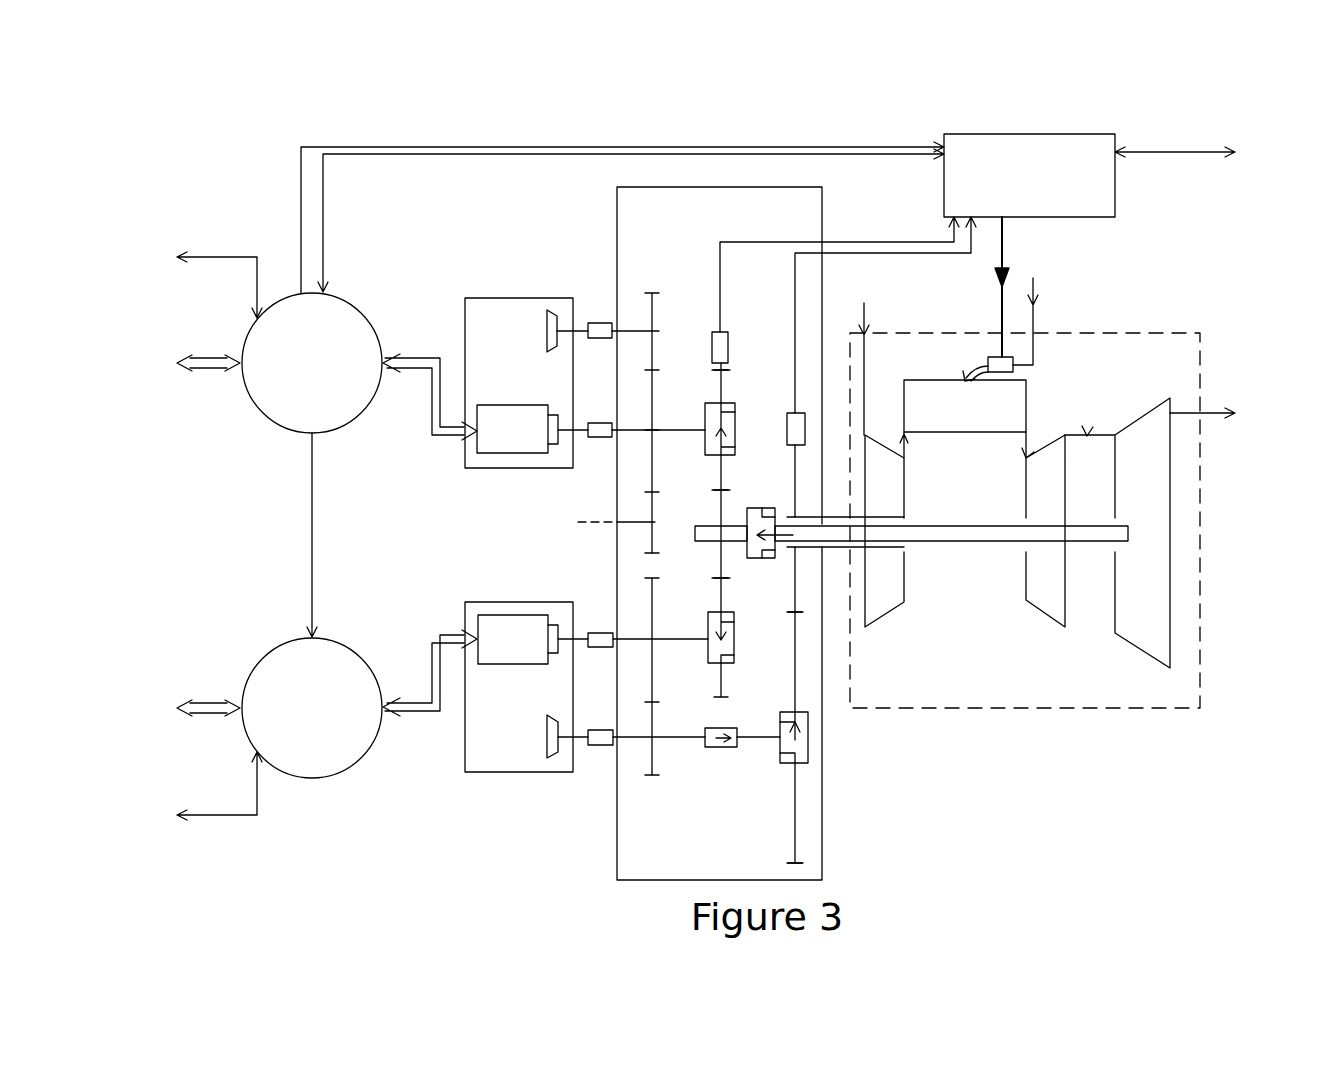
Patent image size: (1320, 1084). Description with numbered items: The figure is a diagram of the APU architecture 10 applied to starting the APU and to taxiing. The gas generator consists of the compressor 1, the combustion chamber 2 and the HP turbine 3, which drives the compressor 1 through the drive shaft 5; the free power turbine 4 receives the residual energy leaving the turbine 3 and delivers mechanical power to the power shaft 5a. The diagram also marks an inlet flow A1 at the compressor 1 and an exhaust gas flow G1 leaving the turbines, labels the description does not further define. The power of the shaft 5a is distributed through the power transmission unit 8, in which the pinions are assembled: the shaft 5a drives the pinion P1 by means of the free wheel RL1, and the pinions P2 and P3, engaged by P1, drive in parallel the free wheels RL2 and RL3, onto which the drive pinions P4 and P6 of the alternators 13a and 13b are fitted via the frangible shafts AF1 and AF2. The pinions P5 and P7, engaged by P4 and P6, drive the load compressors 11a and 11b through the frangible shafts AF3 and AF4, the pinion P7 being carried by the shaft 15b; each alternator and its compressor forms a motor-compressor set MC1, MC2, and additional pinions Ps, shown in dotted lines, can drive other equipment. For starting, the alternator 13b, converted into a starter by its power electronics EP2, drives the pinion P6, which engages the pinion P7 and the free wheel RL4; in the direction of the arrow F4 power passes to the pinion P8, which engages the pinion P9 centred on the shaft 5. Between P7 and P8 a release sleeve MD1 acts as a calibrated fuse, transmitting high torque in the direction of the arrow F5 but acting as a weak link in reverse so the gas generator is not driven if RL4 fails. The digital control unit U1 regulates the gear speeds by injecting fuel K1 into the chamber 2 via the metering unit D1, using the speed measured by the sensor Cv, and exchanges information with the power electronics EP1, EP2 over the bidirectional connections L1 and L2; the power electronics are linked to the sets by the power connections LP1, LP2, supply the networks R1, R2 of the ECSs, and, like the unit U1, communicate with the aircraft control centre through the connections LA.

The compressor 1 is at (888, 603).
The combustion chamber 2 is at (907, 402).
The HP turbine 3 is at (1040, 603).
The power turbine 4 is at (1130, 640).
The drive shaft 5 is at (928, 524).
The power shaft 5a is at (980, 535).
The power transmission unit 8 is at (822, 187).
The APU 10 is at (1180, 350).
The load compressor 11a is at (552, 310).
The load compressor 11b is at (552, 758).
The alternator 13a is at (510, 453).
The alternator 13b is at (510, 615).
The shaft 15b is at (662, 740).
The air intake flow A1 is at (925, 450).
The frangible shaft AF1 is at (600, 423).
The frangible shaft AF2 is at (600, 633).
The frangible shaft AF3 is at (600, 323).
The frangible shaft AF4 is at (597, 745).
The speed sensor Cv is at (729, 342).
The metering unit D1 is at (987, 362).
The power electronics EP1 is at (312, 363).
The power electronics EP2 is at (312, 708).
The arrow F4 is at (798, 730).
The arrow F5 is at (723, 748).
The exhaust gas flow G1 is at (1027, 455).
The fuel K1 is at (1031, 307).
The bidirectional connection L1 is at (437, 154).
The bidirectional connection L2 is at (437, 147).
The aircraft connections LA is at (704, 483).
The power connection LP1 is at (410, 358).
The power connection LP2 is at (447, 635).
The motor-compressor set MC1 is at (465, 467).
The motor-compressor set MC2 is at (492, 602).
The release sleeve MD1 is at (705, 750).
The pinion P1 is at (719, 493).
The pinion P2 is at (722, 372).
The pinion P3 is at (722, 590).
The drive pinion P4 is at (654, 430).
The pinion P5 is at (654, 322).
The drive pinion P6 is at (657, 635).
The pinion P7 is at (653, 722).
The pinion P8 is at (795, 858).
The pinion P9 is at (795, 603).
The additional pinions Ps is at (655, 542).
The network R1 is at (175, 387).
The network R2 is at (175, 732).
The free wheel RL1 is at (752, 508).
The free wheel RL2 is at (707, 403).
The free wheel RL3 is at (708, 650).
The free wheel RL4 is at (780, 714).
The digital control unit U1 is at (1115, 134).